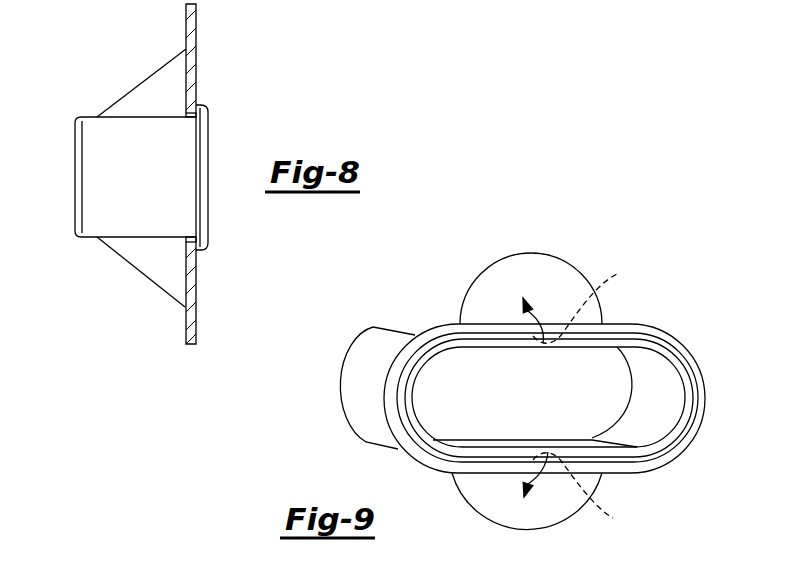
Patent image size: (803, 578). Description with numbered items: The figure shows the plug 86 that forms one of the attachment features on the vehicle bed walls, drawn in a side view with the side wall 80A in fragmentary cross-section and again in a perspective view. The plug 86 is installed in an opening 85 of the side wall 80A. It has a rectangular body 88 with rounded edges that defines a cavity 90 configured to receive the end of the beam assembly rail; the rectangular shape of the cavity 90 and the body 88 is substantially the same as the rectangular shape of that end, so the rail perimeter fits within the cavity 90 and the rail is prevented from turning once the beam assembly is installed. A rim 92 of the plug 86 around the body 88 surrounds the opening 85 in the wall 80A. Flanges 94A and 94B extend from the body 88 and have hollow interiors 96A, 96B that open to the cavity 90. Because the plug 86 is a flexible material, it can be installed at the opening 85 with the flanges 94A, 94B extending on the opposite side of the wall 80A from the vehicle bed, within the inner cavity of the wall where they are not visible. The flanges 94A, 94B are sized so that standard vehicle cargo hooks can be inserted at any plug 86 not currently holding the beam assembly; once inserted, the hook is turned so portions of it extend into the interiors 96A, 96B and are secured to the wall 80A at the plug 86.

In FIG. 8, the side wall 80A is at (197, 20).
In FIG. 8, the opening 85 is at (191, 118).
In FIG. 8, the plug 86 is at (157, 178).
In FIG. 9, the plug 86 is at (497, 392).
In FIG. 8, the body 88 is at (97, 188).
In FIG. 9, the body 88 is at (343, 388).
In FIG. 9, the cavity 90 is at (599, 393).
In FIG. 8, the rim 92 is at (200, 102).
In FIG. 9, the rim 92 is at (657, 332).
In FIG. 8, the flange 94A is at (148, 72).
In FIG. 9, the flange 94A is at (477, 291).
In FIG. 8, the flange 94B is at (137, 268).
In FIG. 9, the flange 94B is at (600, 488).
In FIG. 9, the hollow interior 96A is at (617, 274).
In FIG. 9, the hollow interior 96B is at (613, 518).